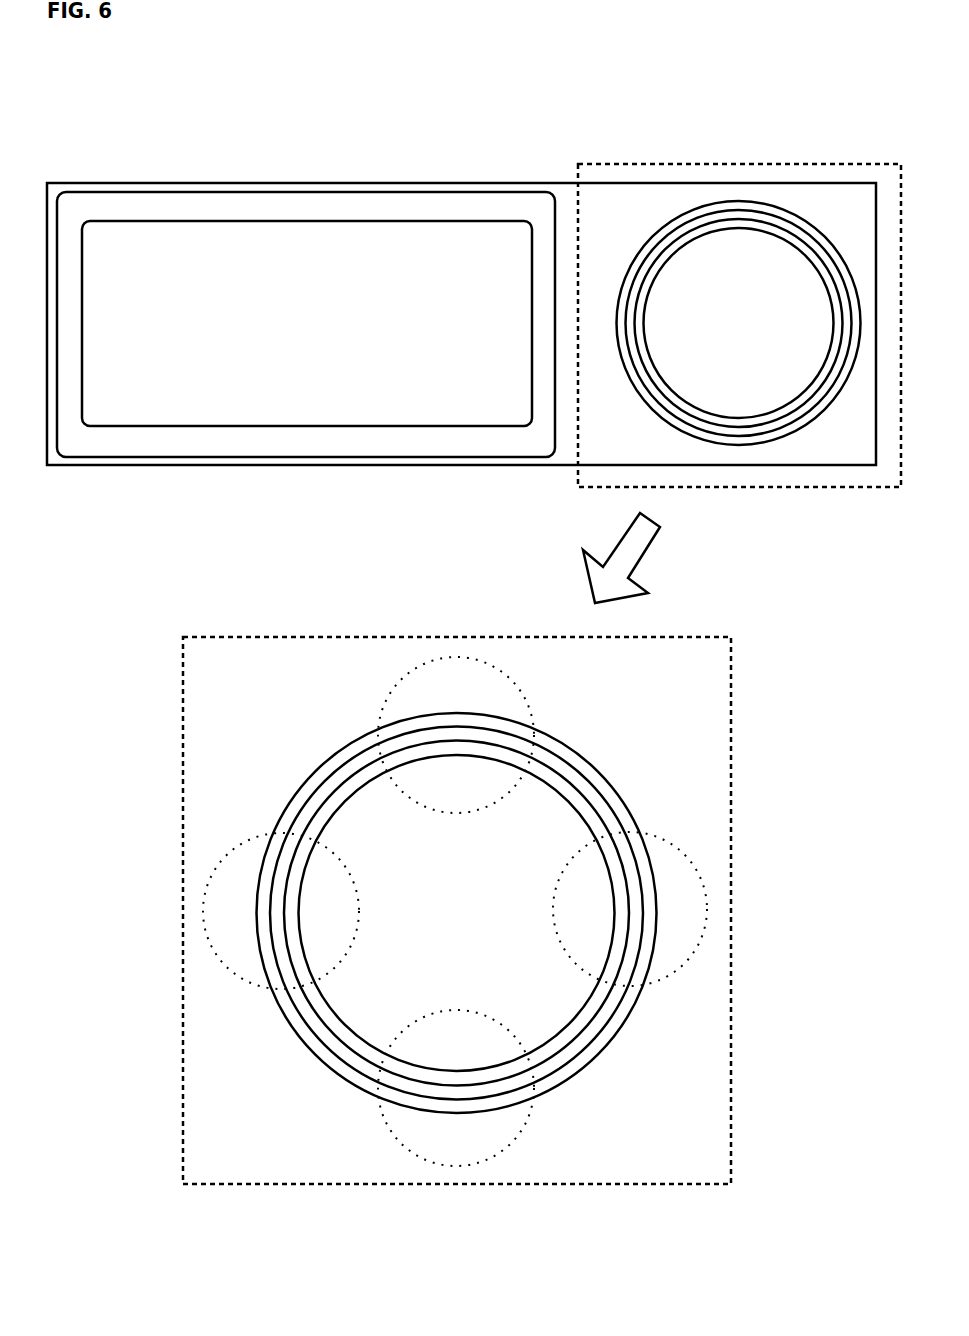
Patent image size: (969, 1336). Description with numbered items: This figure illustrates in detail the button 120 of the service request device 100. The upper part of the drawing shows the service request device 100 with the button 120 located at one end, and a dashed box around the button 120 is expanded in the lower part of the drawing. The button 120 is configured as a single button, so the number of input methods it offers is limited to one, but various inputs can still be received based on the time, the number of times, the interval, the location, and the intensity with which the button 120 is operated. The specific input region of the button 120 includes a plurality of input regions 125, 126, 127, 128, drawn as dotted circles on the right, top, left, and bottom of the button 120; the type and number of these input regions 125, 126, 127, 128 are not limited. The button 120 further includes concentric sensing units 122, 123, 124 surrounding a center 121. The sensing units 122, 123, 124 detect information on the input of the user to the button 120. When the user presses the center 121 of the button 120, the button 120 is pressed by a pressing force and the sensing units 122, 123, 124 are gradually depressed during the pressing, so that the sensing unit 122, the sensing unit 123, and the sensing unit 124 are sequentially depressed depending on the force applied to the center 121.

The service request device 100 is at (836, 142).
The button 120 is at (723, 615).
The center 121 is at (555, 843).
The sensing unit 122 is at (582, 803).
The sensing unit 123 is at (572, 777).
The sensing unit 124 is at (543, 742).
The input region 125 is at (707, 908).
The input region 126 is at (452, 660).
The input region 127 is at (203, 910).
The input region 128 is at (453, 1163).